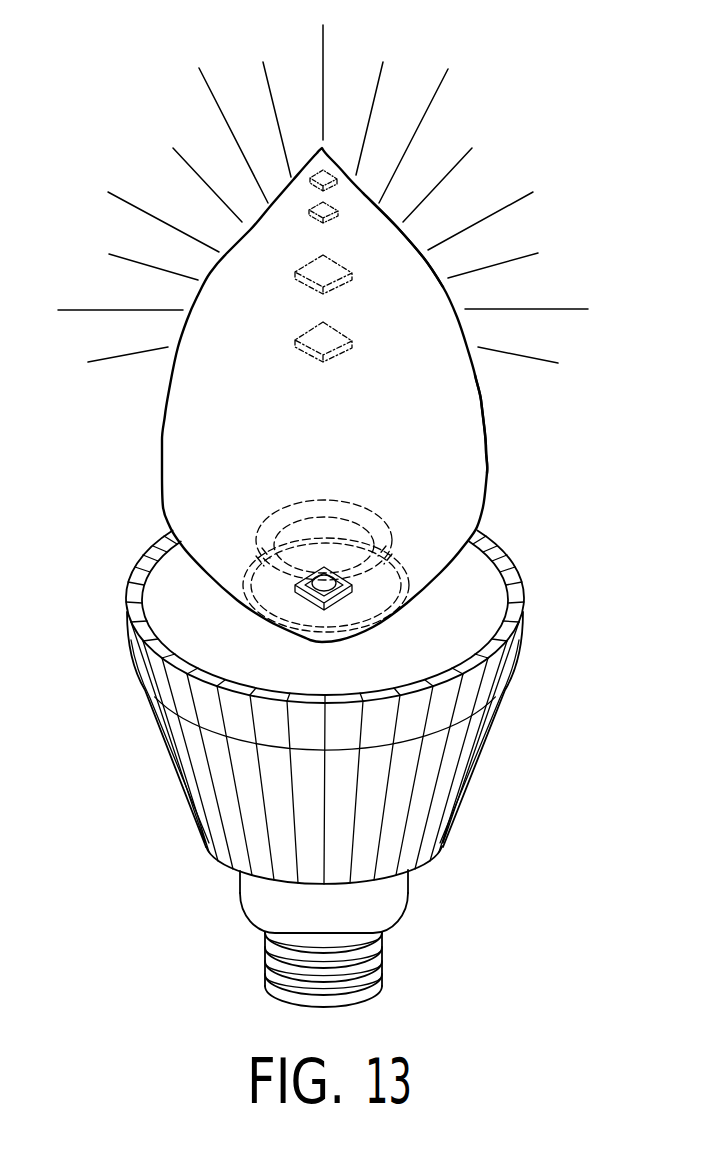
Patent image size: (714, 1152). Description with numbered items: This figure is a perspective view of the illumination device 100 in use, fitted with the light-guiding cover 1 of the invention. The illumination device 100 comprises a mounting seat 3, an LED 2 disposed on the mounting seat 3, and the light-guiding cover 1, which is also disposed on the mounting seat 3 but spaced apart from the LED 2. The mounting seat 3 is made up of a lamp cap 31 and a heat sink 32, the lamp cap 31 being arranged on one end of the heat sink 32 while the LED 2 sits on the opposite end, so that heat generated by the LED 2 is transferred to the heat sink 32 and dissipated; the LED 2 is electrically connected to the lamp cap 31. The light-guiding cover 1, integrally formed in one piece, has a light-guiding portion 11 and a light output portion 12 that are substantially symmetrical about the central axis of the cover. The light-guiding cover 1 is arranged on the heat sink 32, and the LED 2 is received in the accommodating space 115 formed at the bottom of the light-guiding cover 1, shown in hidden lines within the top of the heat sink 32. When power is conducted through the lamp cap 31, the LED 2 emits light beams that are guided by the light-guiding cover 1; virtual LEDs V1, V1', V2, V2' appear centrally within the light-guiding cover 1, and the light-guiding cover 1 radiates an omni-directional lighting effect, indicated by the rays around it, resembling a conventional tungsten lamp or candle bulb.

The illumination device 100 is at (80, 42).
The light-guiding cover 1 is at (140, 435).
The light-guiding portion 11 is at (480, 440).
The light output portion 12 is at (419, 274).
The accommodating space 115 is at (270, 590).
The LED 2 is at (353, 593).
The mounting seat 3 is at (553, 745).
The lamp cap 31 is at (380, 903).
The heat sink 32 is at (443, 778).
The virtual LED V1 is at (294, 316).
The virtual LED V1' is at (371, 371).
The virtual LED V2 is at (364, 140).
The virtual LED V2' is at (378, 184).